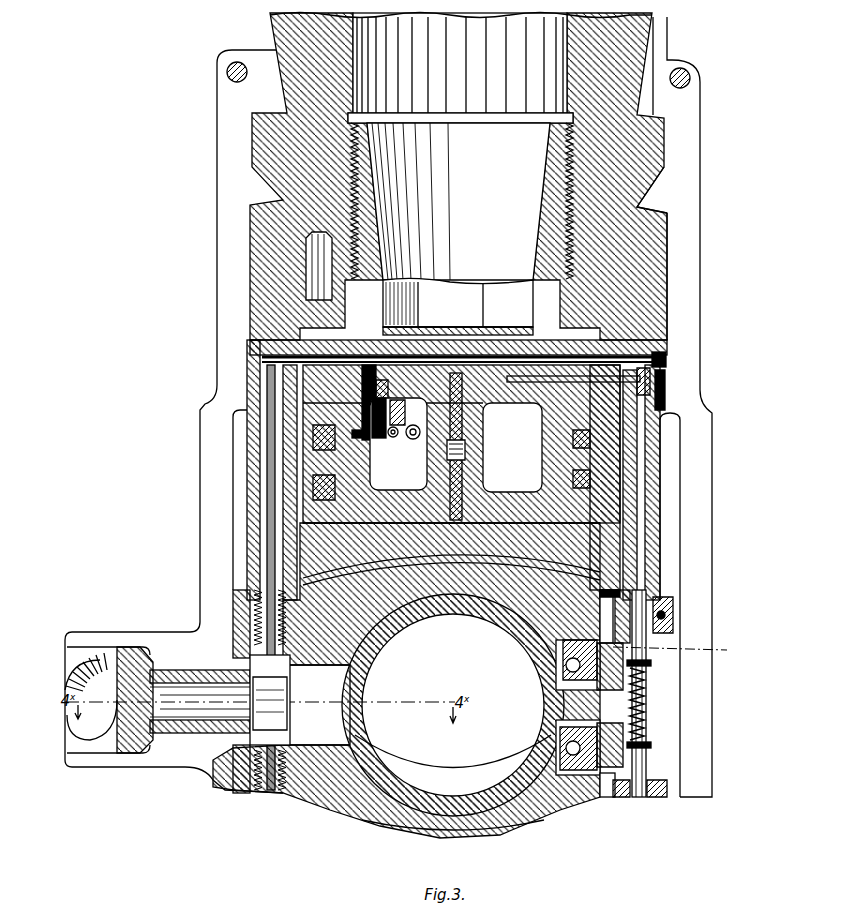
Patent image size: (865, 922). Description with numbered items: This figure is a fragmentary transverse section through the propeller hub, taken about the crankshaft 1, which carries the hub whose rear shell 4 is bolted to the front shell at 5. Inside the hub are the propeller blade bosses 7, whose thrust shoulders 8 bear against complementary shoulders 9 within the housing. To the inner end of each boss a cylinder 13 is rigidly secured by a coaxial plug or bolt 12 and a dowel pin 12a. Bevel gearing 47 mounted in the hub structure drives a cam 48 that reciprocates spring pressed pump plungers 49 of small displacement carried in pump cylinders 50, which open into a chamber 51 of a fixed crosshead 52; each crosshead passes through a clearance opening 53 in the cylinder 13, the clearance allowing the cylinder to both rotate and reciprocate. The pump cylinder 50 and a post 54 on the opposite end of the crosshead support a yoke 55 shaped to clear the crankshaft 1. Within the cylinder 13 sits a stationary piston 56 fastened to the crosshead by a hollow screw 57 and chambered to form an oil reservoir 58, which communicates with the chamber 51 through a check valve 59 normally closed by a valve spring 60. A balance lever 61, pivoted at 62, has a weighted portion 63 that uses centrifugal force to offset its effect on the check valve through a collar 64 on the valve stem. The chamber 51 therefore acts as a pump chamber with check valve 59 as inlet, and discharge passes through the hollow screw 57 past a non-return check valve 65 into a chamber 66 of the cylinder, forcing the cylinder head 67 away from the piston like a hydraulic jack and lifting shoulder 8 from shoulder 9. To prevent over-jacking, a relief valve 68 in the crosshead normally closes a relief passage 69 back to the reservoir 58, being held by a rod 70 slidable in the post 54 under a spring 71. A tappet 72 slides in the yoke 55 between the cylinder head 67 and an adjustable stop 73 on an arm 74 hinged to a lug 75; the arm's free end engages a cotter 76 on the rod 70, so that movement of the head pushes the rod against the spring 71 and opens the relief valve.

The shaft 1 is at (533, 820).
The rear shell 4 is at (217, 162).
The bolts 5 is at (460, 407).
The propeller blade bosses 7 is at (627, 58).
The thrust shoulders 8 is at (663, 218).
The complementary shoulders 9 is at (650, 203).
The coaxial plug or bolt 12 is at (545, 285).
The dowel pin 12a is at (312, 255).
The cylinder 13 is at (607, 483).
The bevel gearing 47 is at (123, 670).
The cam 48 is at (273, 695).
The pump plunger 49 is at (267, 513).
The pump cylinder 50 is at (253, 480).
The chamber 51 is at (664, 355).
The crosshead 52 is at (247, 358).
The clearance opening 53 is at (280, 340).
The post 54 is at (650, 555).
The yoke 55 is at (320, 643).
The stationary piston 56 is at (595, 458).
The hollow screw 57 is at (468, 412).
The oil reservoir 58 is at (398, 444).
The check valve 59 is at (380, 353).
The valve spring 60 is at (367, 412).
The balance lever 61 is at (400, 425).
The pivot 62 is at (392, 440).
The weighted portion 63 is at (414, 440).
The collar 64 is at (317, 433).
The non-return check valve 65 is at (468, 447).
The cylinder chamber 66 is at (603, 528).
The cylinder head 67 is at (610, 585).
The relief valve 68 is at (667, 380).
The relief passage 69 is at (640, 368).
The rod 70 is at (670, 645).
The spring 71 is at (643, 697).
The tappet 72 is at (613, 607).
The adjustable stop 73 is at (580, 770).
The arm 74 is at (595, 683).
The lug 75 is at (550, 672).
The cotter 76 is at (650, 672).